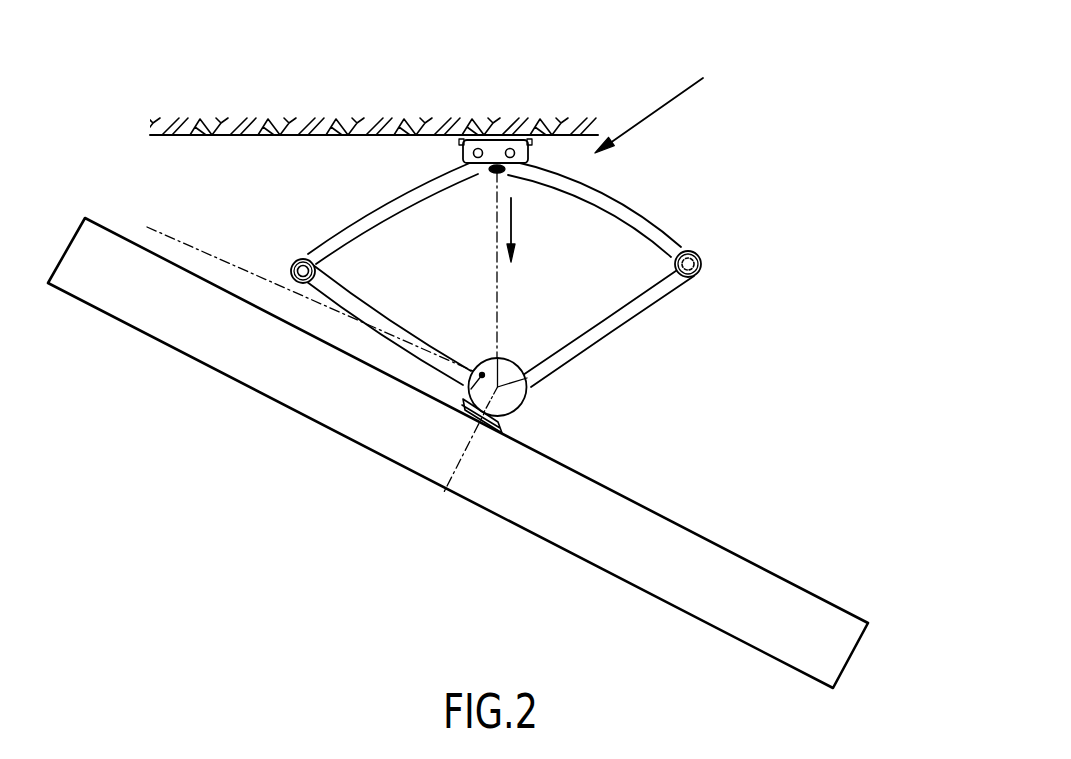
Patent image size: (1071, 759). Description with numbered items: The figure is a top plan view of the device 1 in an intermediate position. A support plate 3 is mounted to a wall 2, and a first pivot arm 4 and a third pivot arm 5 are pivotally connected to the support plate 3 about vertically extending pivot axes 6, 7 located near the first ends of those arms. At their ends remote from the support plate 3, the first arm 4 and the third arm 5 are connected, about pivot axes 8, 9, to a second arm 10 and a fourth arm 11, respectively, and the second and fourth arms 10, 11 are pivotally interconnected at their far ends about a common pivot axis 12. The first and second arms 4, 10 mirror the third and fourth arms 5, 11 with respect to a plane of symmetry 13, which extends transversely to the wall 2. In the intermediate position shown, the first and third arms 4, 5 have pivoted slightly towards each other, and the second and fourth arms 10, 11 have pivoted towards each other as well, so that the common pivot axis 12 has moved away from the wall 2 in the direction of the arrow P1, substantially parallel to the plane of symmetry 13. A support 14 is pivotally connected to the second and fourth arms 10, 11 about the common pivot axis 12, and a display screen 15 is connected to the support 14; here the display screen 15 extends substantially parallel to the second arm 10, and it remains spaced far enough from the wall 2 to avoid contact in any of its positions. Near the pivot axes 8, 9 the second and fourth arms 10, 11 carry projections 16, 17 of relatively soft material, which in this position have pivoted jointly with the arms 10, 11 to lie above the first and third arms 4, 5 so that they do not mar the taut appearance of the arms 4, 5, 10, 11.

The device 1 is at (730, 91).
The wall 2 is at (312, 135).
The support plate 3 is at (497, 139).
The first pivot arm 4 is at (390, 203).
The third pivot arm 5 is at (605, 193).
The pivot axis 6 is at (472, 139).
The pivot axis 7 is at (519, 138).
The pivot axis 8 is at (291, 264).
The pivot axis 9 is at (701, 256).
The second arm 10 is at (410, 347).
The fourth arm 11 is at (625, 318).
The common pivot axis 12 is at (526, 380).
The plane of symmetry 13 is at (498, 308).
The support 14 is at (515, 395).
The display screen 15 is at (553, 520).
The projection 16 is at (306, 259).
The projection 17 is at (680, 251).
The arrow P1 is at (512, 218).